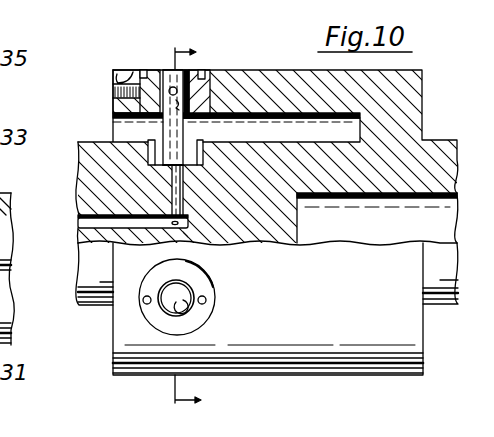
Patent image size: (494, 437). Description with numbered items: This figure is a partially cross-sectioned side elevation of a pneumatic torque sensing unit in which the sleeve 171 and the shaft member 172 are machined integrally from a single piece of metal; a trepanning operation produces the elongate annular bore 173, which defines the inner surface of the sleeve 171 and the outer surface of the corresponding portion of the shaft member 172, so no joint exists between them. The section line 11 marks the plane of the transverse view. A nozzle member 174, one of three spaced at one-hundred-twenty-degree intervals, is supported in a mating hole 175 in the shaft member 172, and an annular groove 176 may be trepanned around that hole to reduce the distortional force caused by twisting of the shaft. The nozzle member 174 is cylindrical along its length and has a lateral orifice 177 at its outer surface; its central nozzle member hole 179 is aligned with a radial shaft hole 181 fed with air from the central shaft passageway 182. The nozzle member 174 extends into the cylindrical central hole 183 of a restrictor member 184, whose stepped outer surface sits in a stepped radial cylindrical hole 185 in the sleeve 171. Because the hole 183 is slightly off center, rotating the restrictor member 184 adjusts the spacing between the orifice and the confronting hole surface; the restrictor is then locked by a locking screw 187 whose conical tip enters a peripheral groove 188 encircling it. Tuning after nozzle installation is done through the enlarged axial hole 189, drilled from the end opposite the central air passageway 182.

The section line 11- 11 is at (176, 226).
The sleeve 171 is at (355, 95).
The shaft member 172 is at (88, 196).
The elongate annular bore 173 is at (280, 133).
The nozzle member 174 is at (163, 143).
The mating hole 175 is at (167, 162).
The annular groove 176 is at (200, 138).
The lateral orifice 177 is at (194, 70).
The central nozzle member hole 179 is at (254, 80).
The radial shaft hole 181 is at (183, 200).
The central shaft passageway 182 is at (80, 224).
The cylindrical central hole 183 is at (167, 72).
The restrictor member 184 is at (142, 72).
The stepped radial cylindrical hole 185 is at (115, 107).
The locking screw 187 is at (113, 78).
The peripheral groove 188 is at (208, 96).
The enlarged axial hole 189 is at (371, 228).